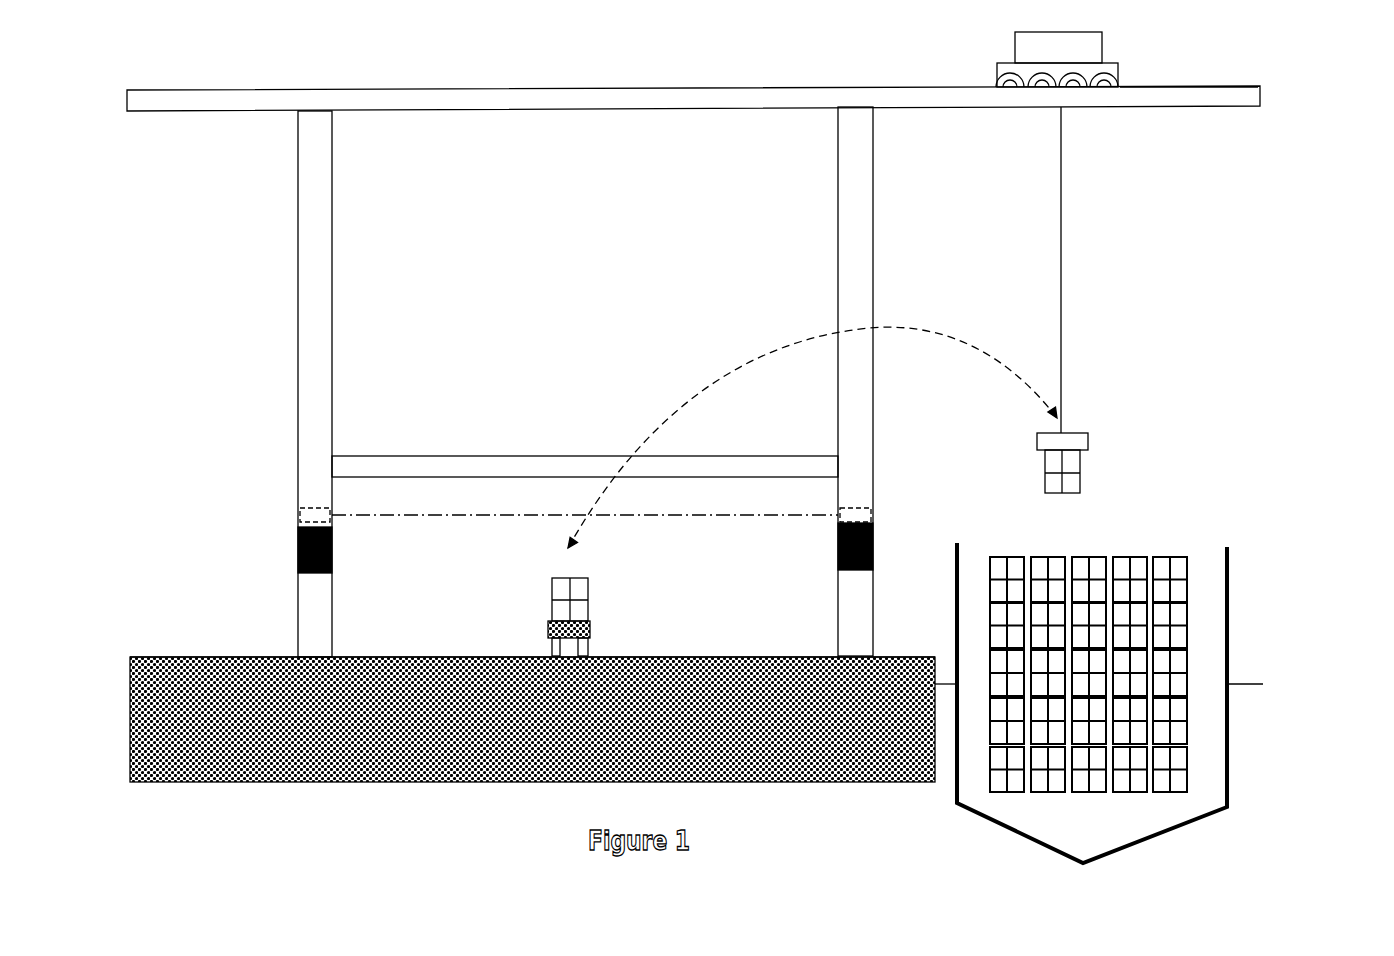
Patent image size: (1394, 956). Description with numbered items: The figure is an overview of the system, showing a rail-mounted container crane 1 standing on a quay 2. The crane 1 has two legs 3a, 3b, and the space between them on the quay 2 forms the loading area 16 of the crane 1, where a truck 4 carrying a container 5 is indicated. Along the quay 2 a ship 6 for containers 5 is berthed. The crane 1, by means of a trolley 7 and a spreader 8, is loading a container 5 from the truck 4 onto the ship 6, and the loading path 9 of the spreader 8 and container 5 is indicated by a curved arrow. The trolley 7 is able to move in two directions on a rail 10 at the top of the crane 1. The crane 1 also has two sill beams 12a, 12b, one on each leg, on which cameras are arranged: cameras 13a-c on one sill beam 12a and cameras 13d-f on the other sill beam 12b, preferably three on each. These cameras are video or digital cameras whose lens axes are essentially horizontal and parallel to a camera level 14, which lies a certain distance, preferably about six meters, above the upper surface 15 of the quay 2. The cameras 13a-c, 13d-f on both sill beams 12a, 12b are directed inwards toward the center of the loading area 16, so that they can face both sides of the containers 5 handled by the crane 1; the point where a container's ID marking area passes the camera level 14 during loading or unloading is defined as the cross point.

The container crane 1 is at (628, 82).
The quay 2 is at (197, 655).
The leg 3a is at (310, 213).
The leg 3b is at (840, 218).
The truck 4 is at (590, 630).
The container 5 is at (577, 595).
The ship 6 is at (1240, 626).
The trolley 7 is at (1002, 45).
The spreader 8 is at (1037, 438).
The loading path 9 is at (693, 402).
The rail 10 is at (1188, 92).
The sill beam 12a is at (298, 548).
The sill beam 12b is at (838, 550).
The cameras 13a-c is at (303, 515).
The cameras 13d-f is at (876, 512).
The camera level 14 is at (397, 511).
The upper surface 15 is at (428, 657).
The loading area 16 is at (488, 635).